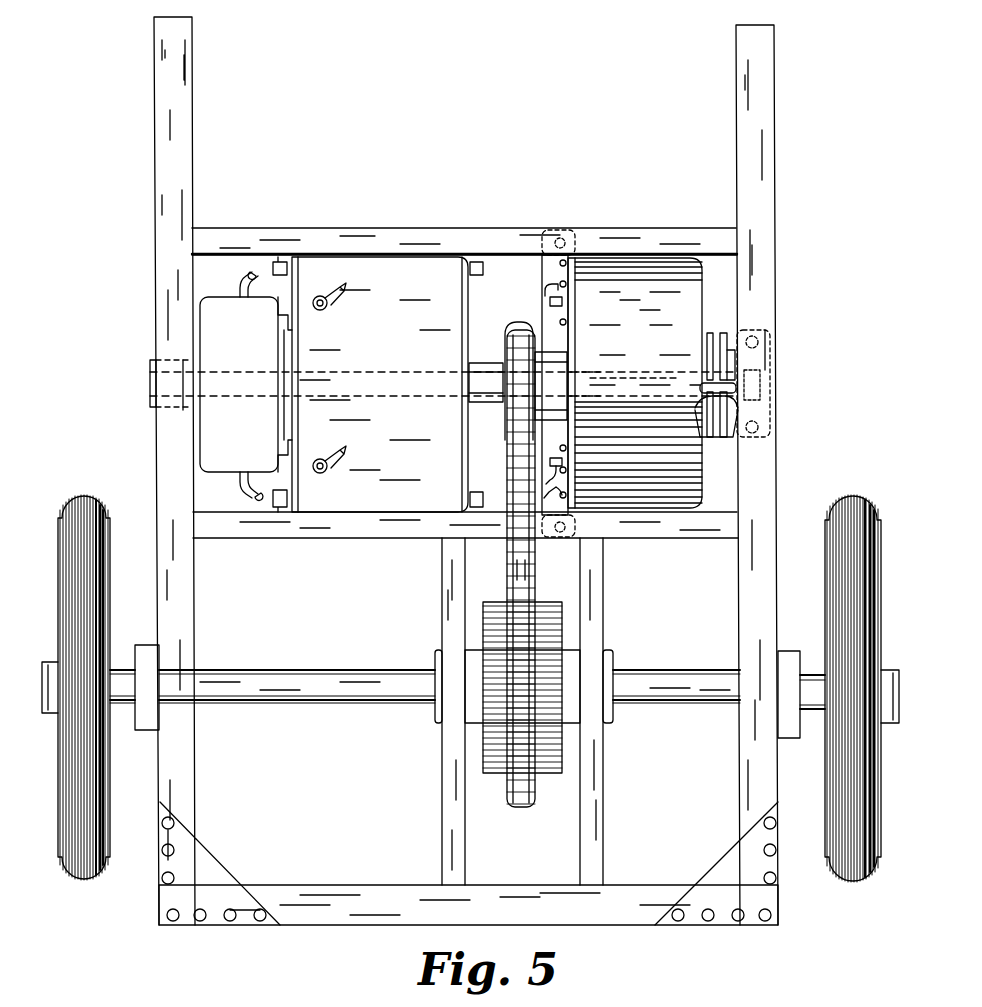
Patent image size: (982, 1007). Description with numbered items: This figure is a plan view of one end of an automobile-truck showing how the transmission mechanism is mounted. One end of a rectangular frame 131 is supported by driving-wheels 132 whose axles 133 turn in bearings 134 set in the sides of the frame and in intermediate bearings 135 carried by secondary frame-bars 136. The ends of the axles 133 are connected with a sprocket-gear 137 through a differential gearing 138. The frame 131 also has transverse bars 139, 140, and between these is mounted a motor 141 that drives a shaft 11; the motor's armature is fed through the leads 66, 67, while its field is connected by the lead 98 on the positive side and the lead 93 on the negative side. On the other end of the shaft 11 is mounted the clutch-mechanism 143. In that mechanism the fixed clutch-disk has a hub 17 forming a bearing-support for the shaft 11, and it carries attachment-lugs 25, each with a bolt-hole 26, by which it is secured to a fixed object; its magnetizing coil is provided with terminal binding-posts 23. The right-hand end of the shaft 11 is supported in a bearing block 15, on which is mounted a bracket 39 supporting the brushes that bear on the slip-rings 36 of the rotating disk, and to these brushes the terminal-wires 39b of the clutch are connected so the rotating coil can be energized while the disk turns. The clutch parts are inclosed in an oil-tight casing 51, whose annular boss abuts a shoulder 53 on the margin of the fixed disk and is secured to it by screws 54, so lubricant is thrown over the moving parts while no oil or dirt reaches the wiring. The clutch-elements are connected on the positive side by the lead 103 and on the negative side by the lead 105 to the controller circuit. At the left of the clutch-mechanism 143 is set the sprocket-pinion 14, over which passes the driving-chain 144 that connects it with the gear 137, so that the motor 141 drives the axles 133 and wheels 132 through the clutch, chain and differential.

The shaft 11 is at (497, 362).
The sprocket-pinion 14 is at (505, 420).
The bearing block 15 is at (745, 328).
The hub 17 is at (548, 358).
The terminal binding-posts 23 is at (536, 465).
The attachment-lugs 25 is at (548, 262).
The bolt-hole 26 is at (576, 232).
The slip-rings 36 is at (724, 333).
The bracket 39 is at (700, 386).
The terminal-wires 39b is at (725, 420).
The casing 51 is at (697, 300).
The shoulder 53 is at (571, 365).
The screws 54 is at (566, 310).
The lead 66 is at (338, 290).
The lead 67 is at (338, 453).
The lead 93 is at (246, 280).
The lead 98 is at (246, 492).
The lead 103 is at (545, 286).
The lead 105 is at (550, 505).
The rectangular frame 131 is at (354, 922).
The driving-wheels 132 is at (832, 882).
The axles 133 is at (700, 688).
The bearings 134 is at (782, 652).
The intermediate bearings 135 is at (606, 670).
The secondary frame-bars 136 is at (596, 786).
The sprocket-gear 137 is at (518, 790).
The differential gearing 138 is at (540, 612).
The transverse bar 139 is at (395, 540).
The transverse bar 140 is at (432, 240).
The motor 141 is at (340, 382).
The clutch-mechanism 143 is at (635, 360).
The driving-chain 144 is at (510, 562).